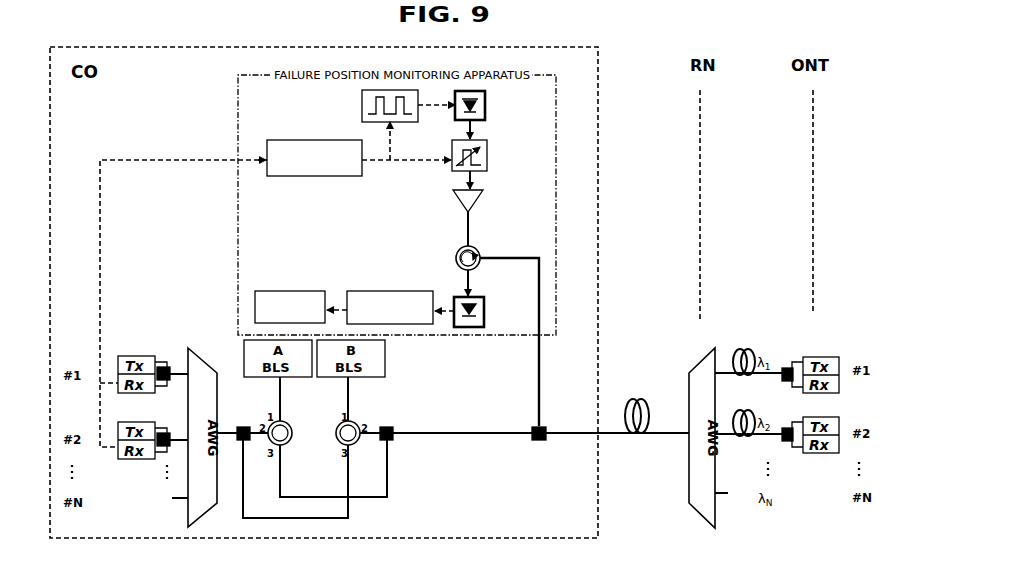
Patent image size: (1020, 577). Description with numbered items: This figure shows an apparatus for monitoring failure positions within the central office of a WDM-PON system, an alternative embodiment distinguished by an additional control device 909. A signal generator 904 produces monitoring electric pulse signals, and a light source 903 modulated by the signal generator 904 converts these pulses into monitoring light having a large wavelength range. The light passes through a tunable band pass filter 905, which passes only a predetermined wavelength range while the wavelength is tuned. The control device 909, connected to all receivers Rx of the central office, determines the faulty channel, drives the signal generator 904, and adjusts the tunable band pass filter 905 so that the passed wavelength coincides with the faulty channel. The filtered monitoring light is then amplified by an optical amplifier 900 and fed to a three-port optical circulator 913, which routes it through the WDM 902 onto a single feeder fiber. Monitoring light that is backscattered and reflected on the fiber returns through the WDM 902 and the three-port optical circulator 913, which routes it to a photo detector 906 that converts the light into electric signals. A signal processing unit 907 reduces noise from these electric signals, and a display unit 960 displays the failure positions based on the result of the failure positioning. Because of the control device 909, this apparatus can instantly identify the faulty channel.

The optical amplifier 900 is at (457, 197).
The WDM 902 is at (532, 443).
The light source 903 is at (486, 115).
The signal generator 904 is at (361, 102).
The tunable band pass filter 905 is at (487, 160).
The photo detector 906 is at (485, 312).
The signal processing unit 907 is at (388, 290).
The control device 909 is at (290, 177).
The three-port optical circulator 913 is at (481, 251).
The display unit 960 is at (286, 290).